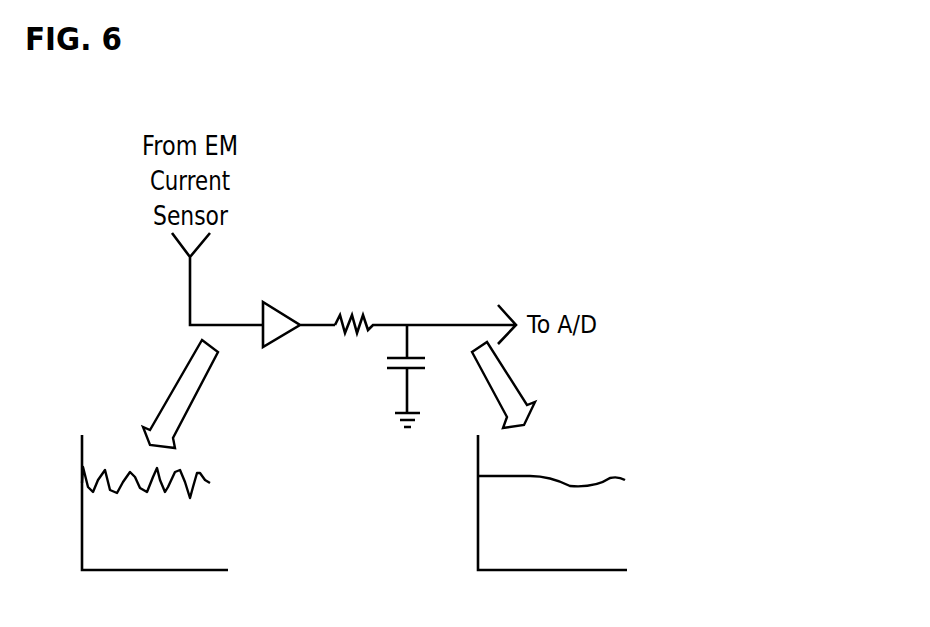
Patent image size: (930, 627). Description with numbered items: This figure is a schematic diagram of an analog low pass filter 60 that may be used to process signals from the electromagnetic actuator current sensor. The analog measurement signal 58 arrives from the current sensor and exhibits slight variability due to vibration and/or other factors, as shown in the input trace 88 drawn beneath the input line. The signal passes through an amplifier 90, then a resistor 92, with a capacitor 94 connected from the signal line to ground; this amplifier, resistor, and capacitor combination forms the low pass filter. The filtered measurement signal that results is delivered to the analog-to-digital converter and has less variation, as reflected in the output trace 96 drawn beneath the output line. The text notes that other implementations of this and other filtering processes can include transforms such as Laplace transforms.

The analog measurement signal 58 is at (190, 303).
The low pass filter 60 is at (384, 68).
The input trace 88 is at (238, 479).
The amplifier 90 is at (283, 302).
The resistor 92 is at (353, 312).
The capacitor 94 is at (397, 372).
The output trace 96 is at (657, 478).